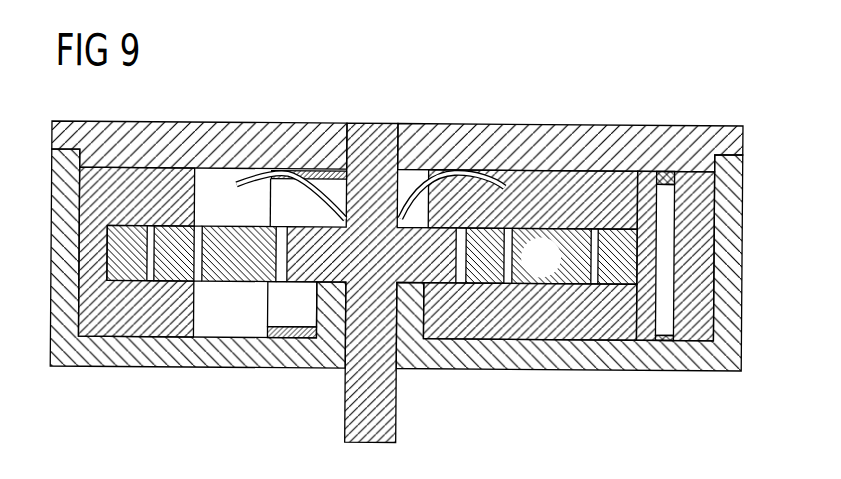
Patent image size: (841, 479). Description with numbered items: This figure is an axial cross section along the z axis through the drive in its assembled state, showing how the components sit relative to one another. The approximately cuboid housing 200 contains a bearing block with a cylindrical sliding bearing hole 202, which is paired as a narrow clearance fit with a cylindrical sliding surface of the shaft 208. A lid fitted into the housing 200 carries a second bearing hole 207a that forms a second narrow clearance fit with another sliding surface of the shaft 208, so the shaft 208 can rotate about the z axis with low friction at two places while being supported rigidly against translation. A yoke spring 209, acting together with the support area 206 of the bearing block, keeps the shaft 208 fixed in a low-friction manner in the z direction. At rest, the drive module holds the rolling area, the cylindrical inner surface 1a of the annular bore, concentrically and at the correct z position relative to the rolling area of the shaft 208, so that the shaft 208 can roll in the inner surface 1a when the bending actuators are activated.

The housing 200 is at (595, 351).
The sliding bearing hole 202 is at (404, 349).
The support area 206 is at (301, 287).
The second bearing hole 207a is at (338, 140).
The shaft 208 is at (372, 121).
The yoke spring 209 is at (474, 169).
The cylindrical inner surface 1a is at (470, 257).